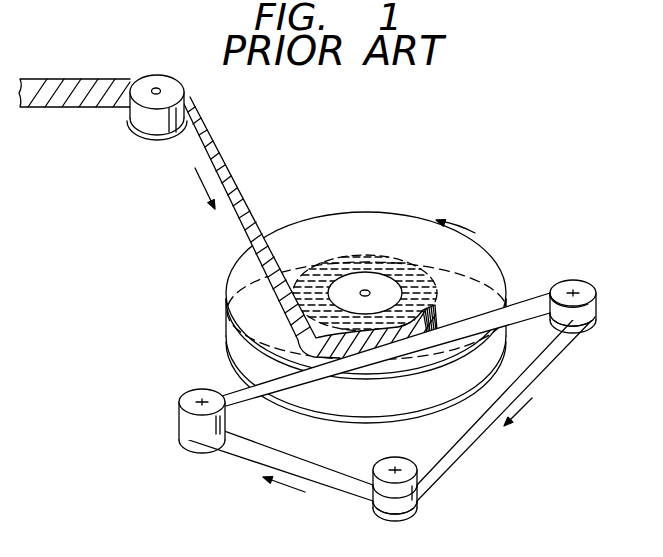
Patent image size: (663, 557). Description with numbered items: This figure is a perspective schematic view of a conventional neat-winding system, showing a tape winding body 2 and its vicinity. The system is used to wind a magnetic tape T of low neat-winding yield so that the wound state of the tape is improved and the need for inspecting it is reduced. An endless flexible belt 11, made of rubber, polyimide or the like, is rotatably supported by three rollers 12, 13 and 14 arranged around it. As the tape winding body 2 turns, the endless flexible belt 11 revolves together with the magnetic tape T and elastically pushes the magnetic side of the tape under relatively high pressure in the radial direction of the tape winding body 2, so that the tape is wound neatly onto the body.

The magnetic tape T is at (228, 190).
The tape winding body 2 is at (383, 226).
The endless flexible belt 11 is at (228, 390).
The roller 12 is at (190, 397).
The roller 13 is at (583, 290).
The roller 14 is at (412, 467).